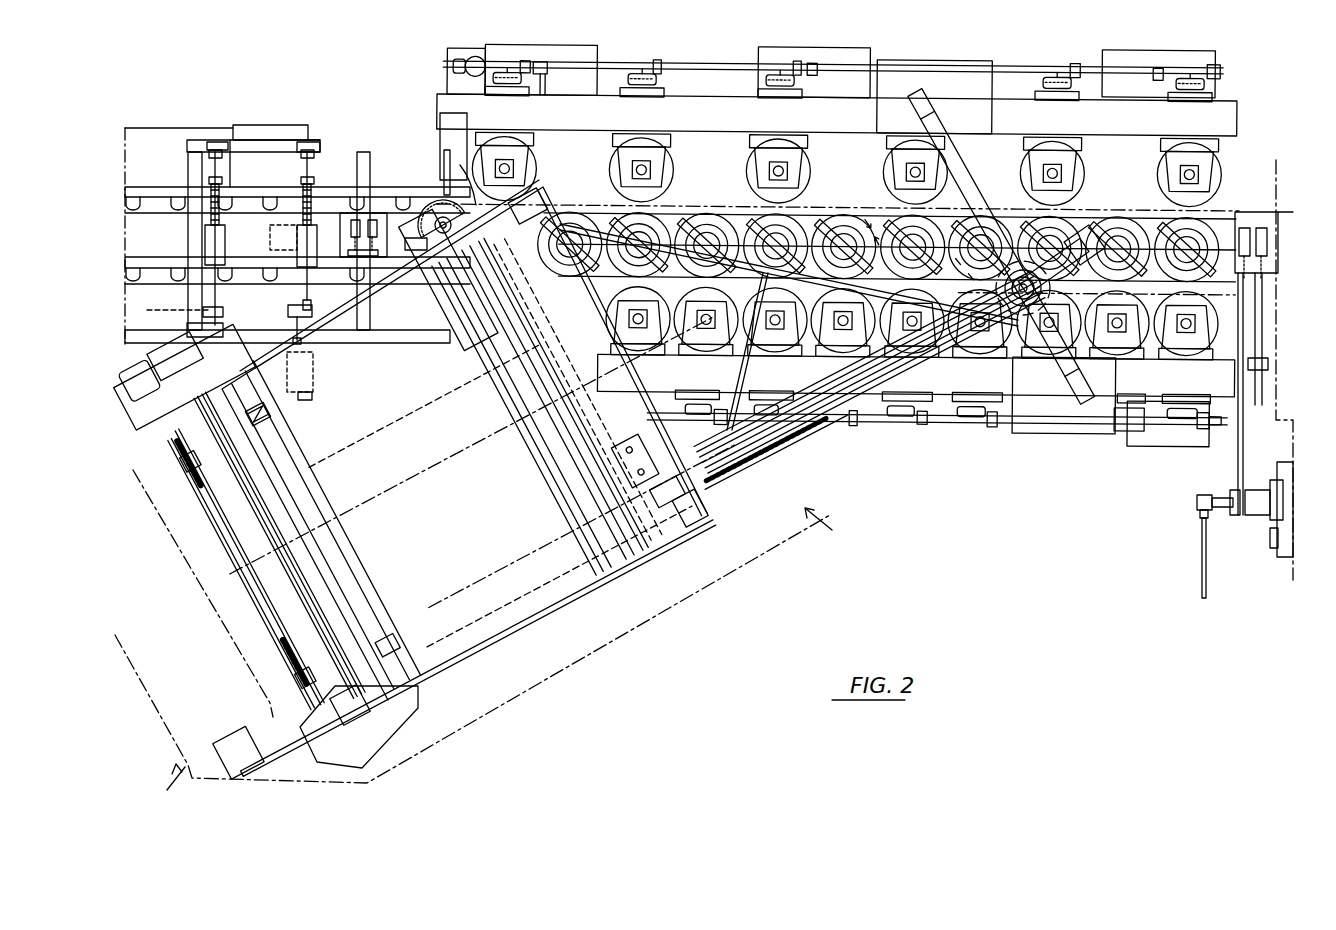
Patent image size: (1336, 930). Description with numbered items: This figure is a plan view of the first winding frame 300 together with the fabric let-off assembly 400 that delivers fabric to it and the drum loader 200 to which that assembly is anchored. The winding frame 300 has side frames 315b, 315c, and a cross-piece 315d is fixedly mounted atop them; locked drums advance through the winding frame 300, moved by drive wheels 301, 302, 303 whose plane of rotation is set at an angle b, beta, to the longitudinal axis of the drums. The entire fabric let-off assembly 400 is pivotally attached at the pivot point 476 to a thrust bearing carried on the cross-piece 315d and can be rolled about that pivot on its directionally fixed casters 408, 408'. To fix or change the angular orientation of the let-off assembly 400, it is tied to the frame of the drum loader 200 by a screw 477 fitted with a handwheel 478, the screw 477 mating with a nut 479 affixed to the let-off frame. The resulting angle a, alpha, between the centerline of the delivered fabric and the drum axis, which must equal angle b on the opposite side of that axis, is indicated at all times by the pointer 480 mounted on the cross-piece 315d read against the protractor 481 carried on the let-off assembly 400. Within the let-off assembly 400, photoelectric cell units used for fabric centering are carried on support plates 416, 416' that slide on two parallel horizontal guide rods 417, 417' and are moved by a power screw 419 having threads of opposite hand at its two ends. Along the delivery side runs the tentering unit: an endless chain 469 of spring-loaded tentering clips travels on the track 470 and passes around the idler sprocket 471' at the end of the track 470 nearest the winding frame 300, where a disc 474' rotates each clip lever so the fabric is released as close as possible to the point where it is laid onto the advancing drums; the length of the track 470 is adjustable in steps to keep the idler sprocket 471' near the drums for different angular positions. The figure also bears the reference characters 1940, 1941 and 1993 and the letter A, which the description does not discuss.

The drum loader 200 is at (316, 232).
The winding frame 300 is at (863, 321).
The drive wheel 301 is at (1220, 172).
The drive wheel 302 is at (1228, 214).
The drive wheel 303 is at (1165, 332).
The side frame 315b is at (836, 137).
The side frame 315c is at (916, 411).
The cross-piece 315d is at (441, 205).
The fabric let-off assembly 400 is at (451, 466).
The caster 408 is at (282, 418).
The caster 408' is at (408, 640).
The support plate 416 is at (168, 462).
The support plate 416' is at (281, 673).
The guide rod 417 is at (240, 567).
The guide rod 417' is at (260, 641).
The power screw 419 is at (214, 524).
The tentering clip chain 469 is at (773, 457).
The track 470 is at (797, 430).
The idler sprocket 471' is at (1001, 247).
The disc 474' is at (1033, 303).
The pivot point 476 is at (440, 205).
The screw 477 is at (300, 316).
The handwheel 478 is at (308, 393).
The nut 479 is at (306, 362).
The pointer 480 is at (448, 195).
The protractor 481 is at (425, 212).
The coupling 1940 is at (1236, 494).
The rod 1941 is at (1243, 437).
The sensor rod 1993 is at (1202, 557).
The reference point A is at (1283, 562).
The angle alpha a is at (874, 232).
The angle beta b is at (964, 269).